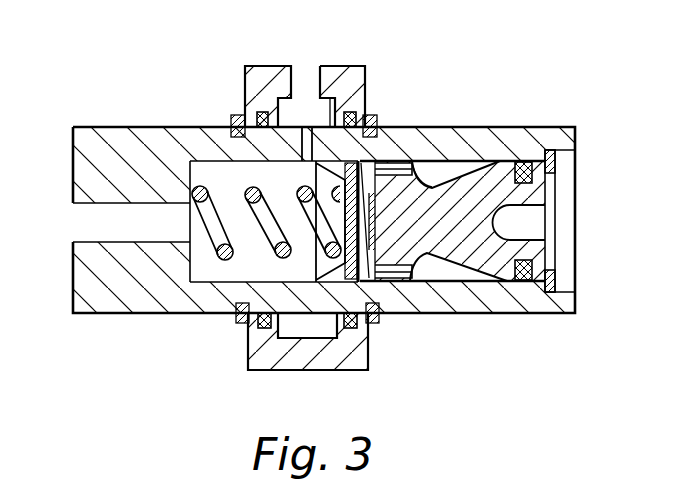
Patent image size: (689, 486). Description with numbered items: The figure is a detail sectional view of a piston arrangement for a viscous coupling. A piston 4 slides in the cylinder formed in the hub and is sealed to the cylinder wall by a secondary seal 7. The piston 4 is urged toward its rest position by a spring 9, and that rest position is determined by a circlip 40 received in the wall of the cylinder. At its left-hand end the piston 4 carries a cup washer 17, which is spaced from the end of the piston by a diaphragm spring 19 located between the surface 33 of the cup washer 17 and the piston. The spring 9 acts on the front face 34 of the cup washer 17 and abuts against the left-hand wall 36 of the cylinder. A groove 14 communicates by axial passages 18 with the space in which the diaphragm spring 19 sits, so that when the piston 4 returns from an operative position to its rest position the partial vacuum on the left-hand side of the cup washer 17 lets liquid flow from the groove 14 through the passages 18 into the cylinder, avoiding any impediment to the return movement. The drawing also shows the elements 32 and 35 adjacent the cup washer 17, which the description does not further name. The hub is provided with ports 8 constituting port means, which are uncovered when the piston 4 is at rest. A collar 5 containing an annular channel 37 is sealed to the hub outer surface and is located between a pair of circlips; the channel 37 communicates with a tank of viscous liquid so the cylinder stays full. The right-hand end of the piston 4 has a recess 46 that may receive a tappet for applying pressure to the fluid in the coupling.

The piston 4 is at (463, 237).
The collar 5 is at (267, 70).
The secondary seal 7 is at (523, 163).
The ports 8 is at (307, 137).
The spring 9 is at (223, 258).
The groove 14 is at (485, 130).
The cup washer 17 is at (330, 147).
The axial passages 18 is at (457, 173).
The diaphragm spring 19 is at (372, 170).
The valve member 32 is at (333, 282).
The surface of the cup washer 33 is at (357, 208).
The front face of the cup washer 34 is at (343, 228).
The sealing disc 35 is at (358, 288).
The wall of the cylinder 36 is at (200, 260).
The annular channel 37 is at (292, 108).
The circlip 40 is at (556, 272).
The recess 46 is at (528, 220).